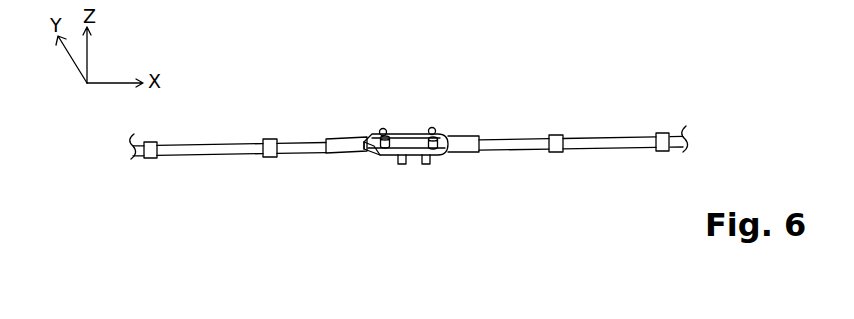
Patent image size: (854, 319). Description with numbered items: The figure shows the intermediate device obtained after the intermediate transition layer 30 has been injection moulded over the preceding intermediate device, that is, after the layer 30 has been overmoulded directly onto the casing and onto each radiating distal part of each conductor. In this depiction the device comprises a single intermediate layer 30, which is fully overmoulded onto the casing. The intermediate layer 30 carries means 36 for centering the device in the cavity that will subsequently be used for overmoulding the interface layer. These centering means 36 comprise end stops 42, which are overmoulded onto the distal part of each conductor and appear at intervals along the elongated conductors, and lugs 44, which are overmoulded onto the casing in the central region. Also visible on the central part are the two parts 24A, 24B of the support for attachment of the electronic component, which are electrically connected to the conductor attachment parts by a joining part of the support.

The part for attachment of the electronic component 24A is at (399, 165).
The part for attachment of the electronic component 24B is at (424, 165).
The intermediate transition layer 30 is at (468, 137).
The means for centering the device 36 is at (273, 137).
The end stops 42 is at (151, 158).
The lugs 44 is at (431, 127).